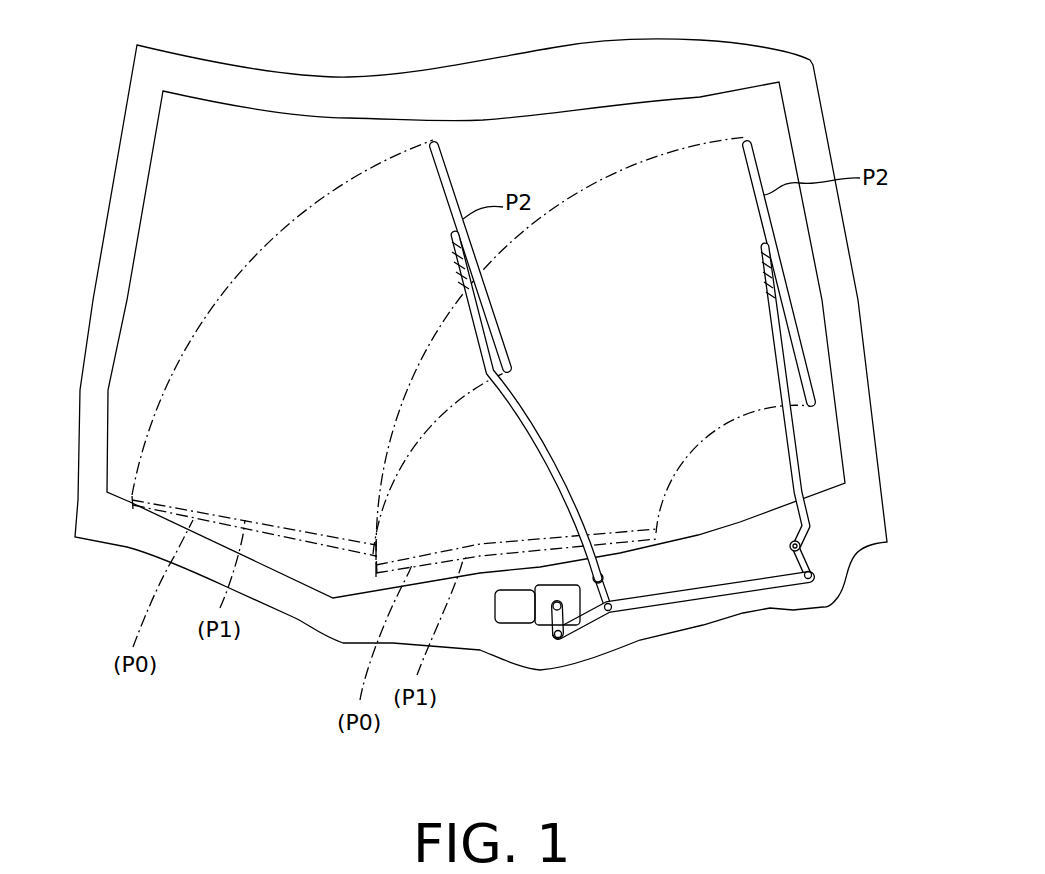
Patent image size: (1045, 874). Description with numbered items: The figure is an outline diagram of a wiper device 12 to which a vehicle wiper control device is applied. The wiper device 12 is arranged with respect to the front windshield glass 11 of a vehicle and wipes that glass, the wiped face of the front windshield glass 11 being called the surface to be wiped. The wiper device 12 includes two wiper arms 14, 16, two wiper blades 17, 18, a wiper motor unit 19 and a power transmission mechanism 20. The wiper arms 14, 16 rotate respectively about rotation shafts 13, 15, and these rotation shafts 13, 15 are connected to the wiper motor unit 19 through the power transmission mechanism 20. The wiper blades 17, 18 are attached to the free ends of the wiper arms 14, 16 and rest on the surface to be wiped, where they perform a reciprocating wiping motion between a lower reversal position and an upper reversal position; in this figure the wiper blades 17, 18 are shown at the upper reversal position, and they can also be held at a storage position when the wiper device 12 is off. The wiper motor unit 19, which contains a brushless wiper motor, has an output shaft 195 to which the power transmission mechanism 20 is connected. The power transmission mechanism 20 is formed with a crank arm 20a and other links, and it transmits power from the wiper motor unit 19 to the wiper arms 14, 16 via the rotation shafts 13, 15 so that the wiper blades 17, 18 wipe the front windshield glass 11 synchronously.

The front windshield glass 11 is at (182, 208).
The wiper device 12 is at (590, 652).
The rotation shaft 13 is at (607, 577).
The wiper arm 14 is at (562, 473).
The rotation shaft 15 is at (800, 545).
The wiper arm 16 is at (797, 452).
The wiper blade 17 is at (465, 213).
The wiper blade 18 is at (797, 312).
The wiper motor unit 19 is at (520, 642).
The output shaft 195 is at (548, 641).
The power transmission mechanism 20 is at (742, 617).
The crank arm 20a is at (572, 638).